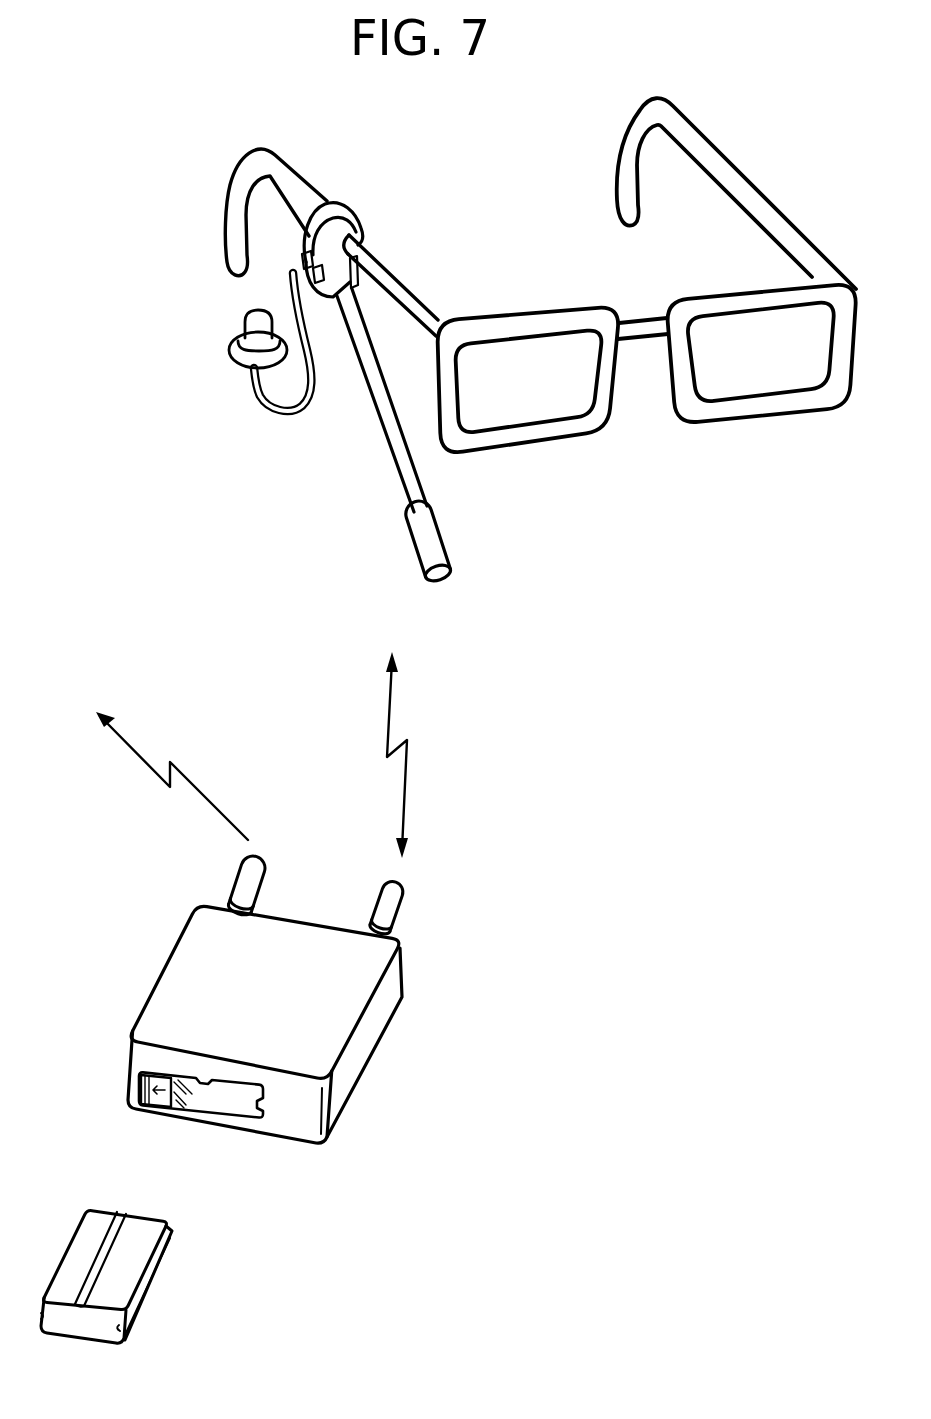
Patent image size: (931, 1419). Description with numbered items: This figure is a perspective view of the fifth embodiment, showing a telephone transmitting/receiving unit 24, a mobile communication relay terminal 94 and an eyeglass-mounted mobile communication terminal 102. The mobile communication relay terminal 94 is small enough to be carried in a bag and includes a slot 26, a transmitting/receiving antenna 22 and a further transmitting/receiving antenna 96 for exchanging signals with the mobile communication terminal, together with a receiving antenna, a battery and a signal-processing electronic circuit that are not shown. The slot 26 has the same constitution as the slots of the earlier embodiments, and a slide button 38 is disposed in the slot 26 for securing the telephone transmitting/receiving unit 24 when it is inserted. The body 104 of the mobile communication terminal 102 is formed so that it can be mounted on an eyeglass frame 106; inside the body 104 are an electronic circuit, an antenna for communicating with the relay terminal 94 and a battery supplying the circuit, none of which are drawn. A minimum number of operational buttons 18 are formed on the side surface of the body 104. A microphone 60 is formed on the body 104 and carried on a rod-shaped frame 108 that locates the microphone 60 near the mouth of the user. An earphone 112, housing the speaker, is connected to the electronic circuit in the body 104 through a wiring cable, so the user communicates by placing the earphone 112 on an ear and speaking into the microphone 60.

The operational buttons 18 is at (305, 262).
The transmitting/receiving antenna 22 is at (245, 880).
The telephone transmitting/receiving unit 24 is at (163, 1282).
The slot 26 is at (247, 1094).
The slide button 38 is at (158, 1102).
The microphone 60 is at (412, 542).
The mobile communication relay terminal 94 is at (376, 1073).
The transmitting/receiving antenna 96 is at (394, 892).
The mobile communication terminal 102 is at (377, 223).
The body of the mobile communication terminal 104 is at (353, 210).
The eyeglass frame 106 is at (403, 288).
The rod-shaped frame 108 is at (388, 432).
The earphone 112 is at (240, 360).